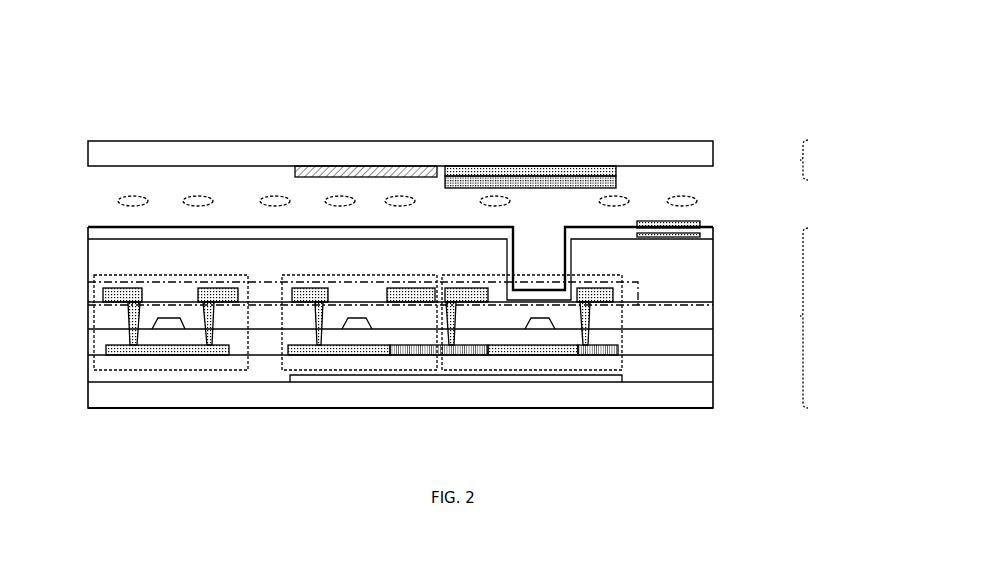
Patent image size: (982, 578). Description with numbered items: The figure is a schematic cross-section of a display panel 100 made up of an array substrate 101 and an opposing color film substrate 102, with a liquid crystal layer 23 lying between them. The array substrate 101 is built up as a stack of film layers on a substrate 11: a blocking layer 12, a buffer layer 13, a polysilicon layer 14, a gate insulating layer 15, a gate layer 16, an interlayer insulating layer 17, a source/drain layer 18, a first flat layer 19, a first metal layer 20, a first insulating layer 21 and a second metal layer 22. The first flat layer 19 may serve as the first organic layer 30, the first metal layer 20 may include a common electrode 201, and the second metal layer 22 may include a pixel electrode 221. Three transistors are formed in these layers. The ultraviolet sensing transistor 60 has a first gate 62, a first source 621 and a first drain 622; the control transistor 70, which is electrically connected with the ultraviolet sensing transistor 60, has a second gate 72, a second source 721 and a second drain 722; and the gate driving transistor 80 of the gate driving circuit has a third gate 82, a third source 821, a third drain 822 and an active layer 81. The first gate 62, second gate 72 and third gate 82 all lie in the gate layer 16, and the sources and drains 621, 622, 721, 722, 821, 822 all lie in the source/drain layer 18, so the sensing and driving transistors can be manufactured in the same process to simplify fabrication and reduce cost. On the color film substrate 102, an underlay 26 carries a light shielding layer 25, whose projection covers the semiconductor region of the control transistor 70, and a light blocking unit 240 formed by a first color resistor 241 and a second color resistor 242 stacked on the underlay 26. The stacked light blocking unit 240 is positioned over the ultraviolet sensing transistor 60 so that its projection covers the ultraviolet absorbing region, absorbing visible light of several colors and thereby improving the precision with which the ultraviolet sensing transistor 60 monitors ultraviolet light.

The display panel 100 is at (708, 129).
The array substrate 101 is at (462, 292).
The color film substrate 102 is at (467, 144).
The substrate 11 is at (705, 401).
The blocking layer 12 is at (623, 377).
The buffer layer 13 is at (705, 366).
The polysilicon layer 14 is at (620, 350).
The gate insulating layer 15 is at (705, 336).
The gate layer 16 is at (556, 322).
The interlayer insulating layer 17 is at (705, 310).
The source/drain layer 18 is at (640, 292).
The first flat layer 19 is at (703, 273).
The first organic layer 30 is at (433, 269).
The first metal layer 20 is at (437, 258).
The common electrode 201 is at (700, 244).
The first insulating layer 21 is at (702, 236).
The second metal layer 22 is at (712, 219).
The pixel electrode 221 is at (700, 224).
The liquid crystal layer 23 is at (697, 201).
The light shielding layer 25 is at (360, 171).
The underlay 26 is at (690, 149).
The light blocking unit 240 is at (556, 109).
The first color resistor 241 is at (500, 171).
The second color resistor 242 is at (540, 183).
The ultraviolet sensing transistor 60 is at (446, 368).
The first gate 62 is at (529, 290).
The first source 621 is at (586, 282).
The first drain 622 is at (457, 296).
The control transistor 70 is at (283, 366).
The second gate 72 is at (345, 377).
The second source 721 is at (322, 303).
The second drain 722 is at (415, 298).
The gate driving transistor 80 is at (112, 369).
The active layer 81 is at (193, 349).
The third gate 82 is at (166, 377).
The third source 821 is at (135, 303).
The third drain 822 is at (222, 298).